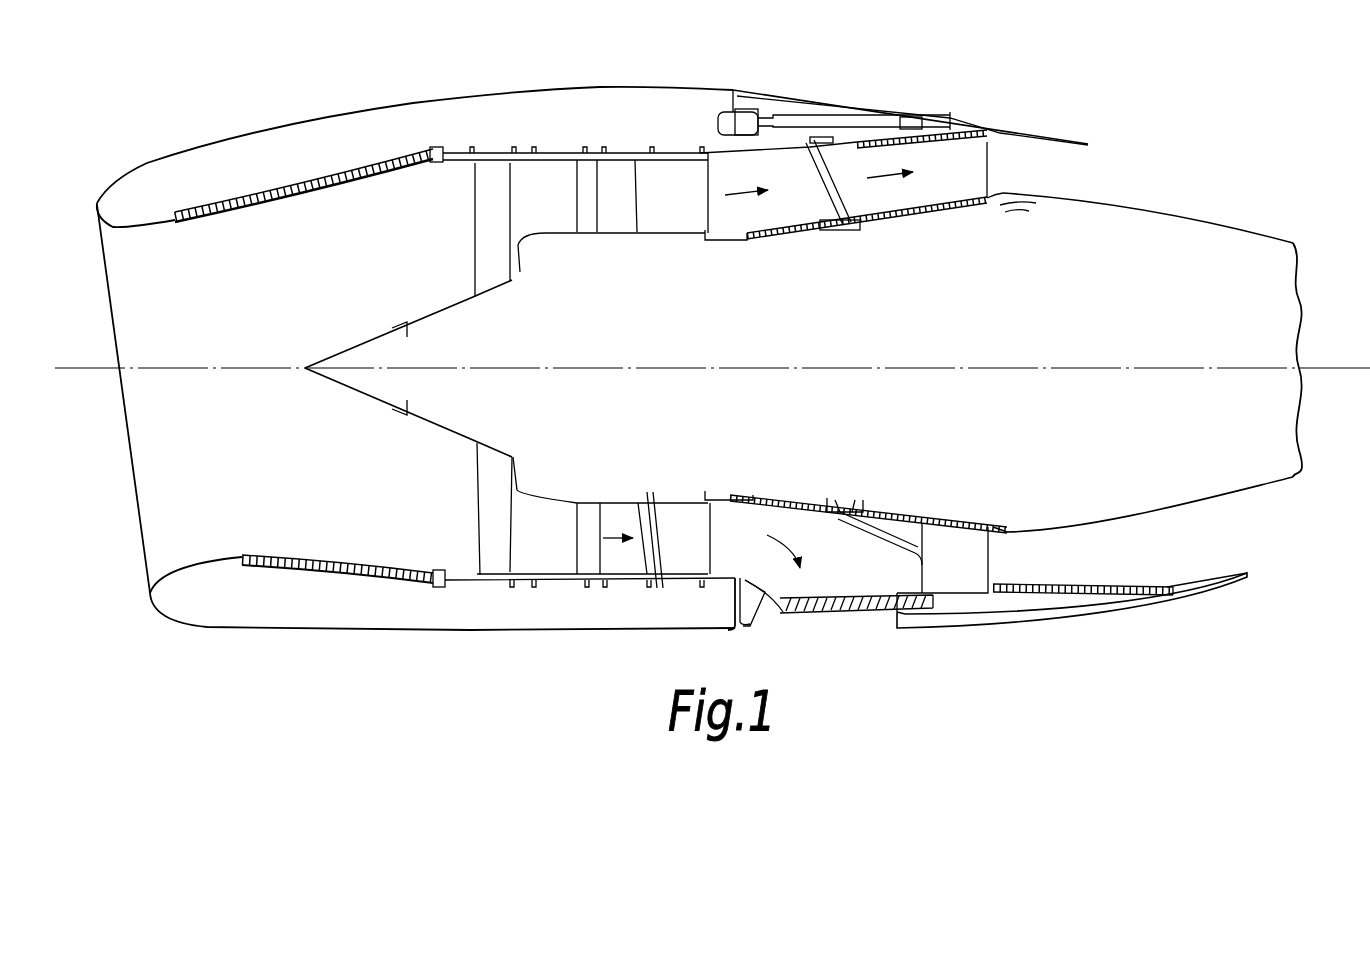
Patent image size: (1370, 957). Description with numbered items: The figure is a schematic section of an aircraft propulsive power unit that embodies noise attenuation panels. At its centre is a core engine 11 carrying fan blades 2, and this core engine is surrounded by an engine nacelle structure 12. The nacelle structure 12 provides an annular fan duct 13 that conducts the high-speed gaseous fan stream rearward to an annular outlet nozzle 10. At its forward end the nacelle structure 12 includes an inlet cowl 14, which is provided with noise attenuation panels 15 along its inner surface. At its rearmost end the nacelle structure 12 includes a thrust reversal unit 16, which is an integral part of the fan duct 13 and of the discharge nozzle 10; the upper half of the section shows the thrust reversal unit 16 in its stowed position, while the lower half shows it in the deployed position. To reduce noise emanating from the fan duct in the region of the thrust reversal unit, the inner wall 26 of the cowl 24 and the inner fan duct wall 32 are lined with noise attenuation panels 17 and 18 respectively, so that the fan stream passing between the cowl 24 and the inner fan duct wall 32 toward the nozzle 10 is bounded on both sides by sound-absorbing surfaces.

The fan blades 2 is at (482, 248).
The annular outlet nozzle 10 is at (1092, 171).
The core engine 11 is at (583, 344).
The engine nacelle structure 12 is at (498, 70).
The annular fan duct 13 is at (615, 188).
The inlet cowl 14 is at (233, 152).
The noise attenuation panels 15 is at (258, 213).
The thrust reversal unit 16 is at (870, 81).
The noise attenuation panel 17 is at (933, 143).
The noise attenuation panel 18 is at (960, 207).
The cowl 24 is at (1003, 118).
The inner wall of the cowl 26 is at (1006, 139).
The inner fan duct wall 32 is at (779, 222).